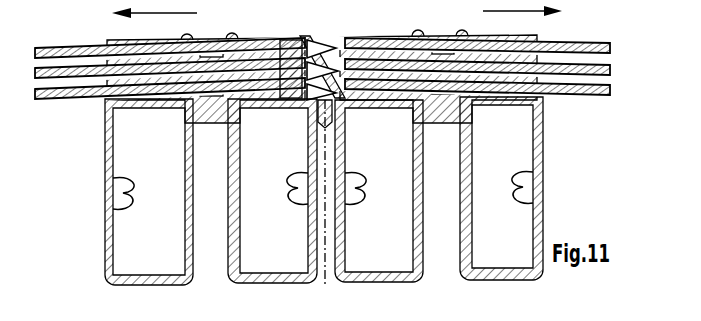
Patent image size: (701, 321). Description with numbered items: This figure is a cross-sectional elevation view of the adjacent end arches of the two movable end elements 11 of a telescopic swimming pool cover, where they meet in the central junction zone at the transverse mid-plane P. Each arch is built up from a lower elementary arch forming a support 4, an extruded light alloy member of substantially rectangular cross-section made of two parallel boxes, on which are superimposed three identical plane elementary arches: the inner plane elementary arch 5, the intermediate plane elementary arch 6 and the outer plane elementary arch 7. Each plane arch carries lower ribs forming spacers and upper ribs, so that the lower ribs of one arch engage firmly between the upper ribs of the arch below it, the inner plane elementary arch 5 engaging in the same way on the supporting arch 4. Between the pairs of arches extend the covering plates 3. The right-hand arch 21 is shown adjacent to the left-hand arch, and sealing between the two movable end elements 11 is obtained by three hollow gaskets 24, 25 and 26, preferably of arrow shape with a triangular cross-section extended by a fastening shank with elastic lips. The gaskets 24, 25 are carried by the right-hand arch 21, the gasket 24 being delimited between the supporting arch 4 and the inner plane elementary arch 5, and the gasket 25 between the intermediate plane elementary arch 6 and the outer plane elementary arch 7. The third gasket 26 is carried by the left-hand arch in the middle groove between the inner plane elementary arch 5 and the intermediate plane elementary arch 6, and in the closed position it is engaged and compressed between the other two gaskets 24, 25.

The covering plates 3 is at (62, 91).
The lower elementary arch forming a support 4 is at (106, 153).
The inner plane elementary arch 5 is at (119, 57).
The intermediate plane elementary arch 6 is at (150, 42).
The outer plane elementary arch 7 is at (310, 42).
The movable end element 11 is at (102, 208).
The right housing block 21 is at (413, 42).
The hollow gasket 24 is at (322, 112).
The hollow gasket 25 is at (326, 40).
The hollow gasket 26 is at (278, 58).
The transverse mid-plane P is at (327, 258).